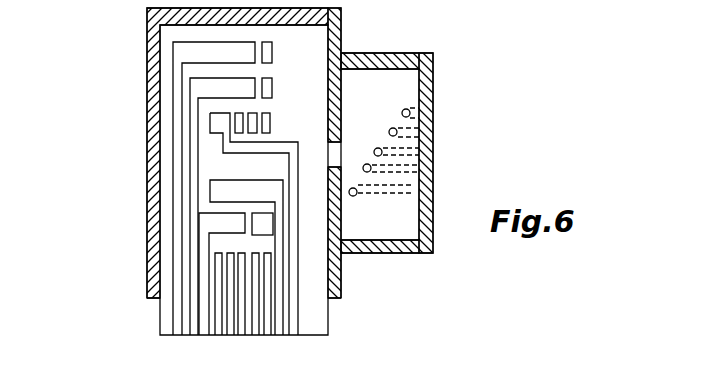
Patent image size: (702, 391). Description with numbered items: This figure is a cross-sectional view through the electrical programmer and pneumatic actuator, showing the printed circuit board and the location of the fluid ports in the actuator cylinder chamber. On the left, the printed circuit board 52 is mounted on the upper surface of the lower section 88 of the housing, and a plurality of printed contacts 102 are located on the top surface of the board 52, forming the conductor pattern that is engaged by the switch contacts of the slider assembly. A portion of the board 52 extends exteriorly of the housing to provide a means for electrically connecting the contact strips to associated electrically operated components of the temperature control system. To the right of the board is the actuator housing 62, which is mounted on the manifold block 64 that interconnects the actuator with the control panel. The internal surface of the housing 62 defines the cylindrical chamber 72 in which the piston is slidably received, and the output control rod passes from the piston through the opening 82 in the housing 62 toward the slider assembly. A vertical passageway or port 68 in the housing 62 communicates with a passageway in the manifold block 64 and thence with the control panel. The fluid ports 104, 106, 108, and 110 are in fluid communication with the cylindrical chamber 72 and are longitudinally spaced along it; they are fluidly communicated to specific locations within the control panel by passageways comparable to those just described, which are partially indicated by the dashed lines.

The printed circuit board 52 is at (160, 313).
The housing 62 is at (372, 53).
The manifold block 64 is at (44, 6).
The vertical passageway or port 68 is at (375, 149).
The cylindrical chamber 72 is at (400, 83).
The opening 82 is at (330, 151).
The lower section 88 is at (147, 87).
The printed contacts 102 is at (239, 36).
The fluid port 104 is at (353, 196).
The fluid port 106 is at (370, 171).
The fluid port 108 is at (393, 128).
The fluid port 110 is at (408, 109).